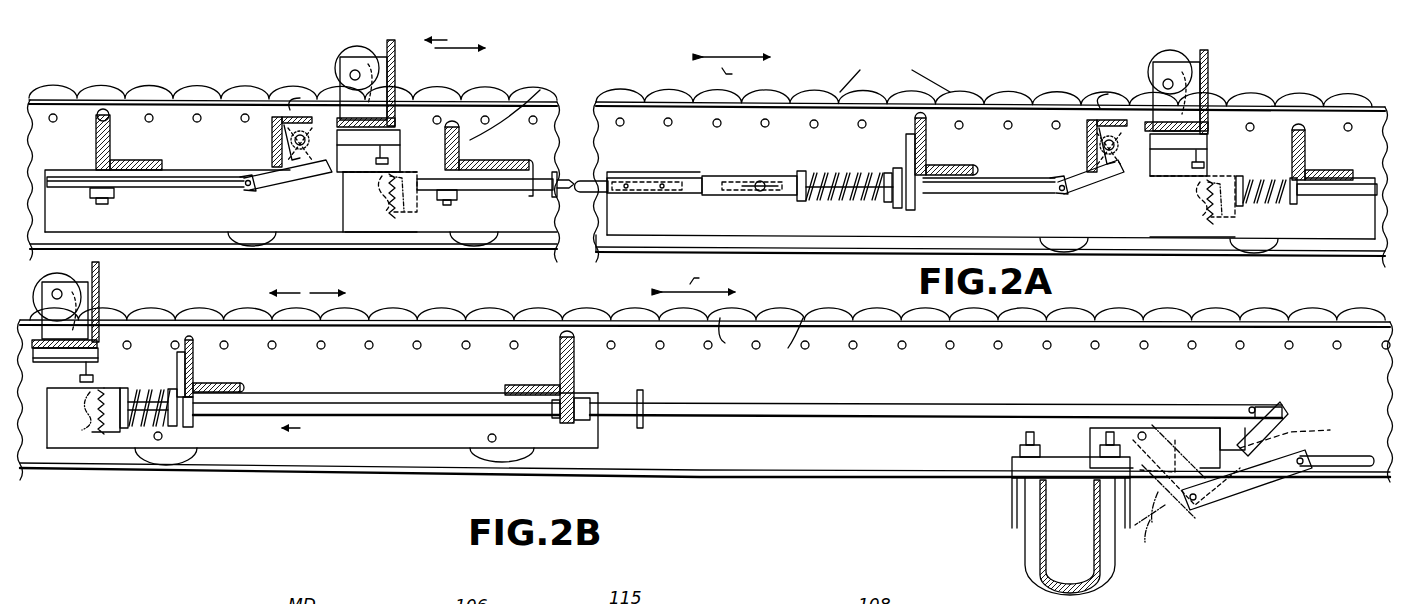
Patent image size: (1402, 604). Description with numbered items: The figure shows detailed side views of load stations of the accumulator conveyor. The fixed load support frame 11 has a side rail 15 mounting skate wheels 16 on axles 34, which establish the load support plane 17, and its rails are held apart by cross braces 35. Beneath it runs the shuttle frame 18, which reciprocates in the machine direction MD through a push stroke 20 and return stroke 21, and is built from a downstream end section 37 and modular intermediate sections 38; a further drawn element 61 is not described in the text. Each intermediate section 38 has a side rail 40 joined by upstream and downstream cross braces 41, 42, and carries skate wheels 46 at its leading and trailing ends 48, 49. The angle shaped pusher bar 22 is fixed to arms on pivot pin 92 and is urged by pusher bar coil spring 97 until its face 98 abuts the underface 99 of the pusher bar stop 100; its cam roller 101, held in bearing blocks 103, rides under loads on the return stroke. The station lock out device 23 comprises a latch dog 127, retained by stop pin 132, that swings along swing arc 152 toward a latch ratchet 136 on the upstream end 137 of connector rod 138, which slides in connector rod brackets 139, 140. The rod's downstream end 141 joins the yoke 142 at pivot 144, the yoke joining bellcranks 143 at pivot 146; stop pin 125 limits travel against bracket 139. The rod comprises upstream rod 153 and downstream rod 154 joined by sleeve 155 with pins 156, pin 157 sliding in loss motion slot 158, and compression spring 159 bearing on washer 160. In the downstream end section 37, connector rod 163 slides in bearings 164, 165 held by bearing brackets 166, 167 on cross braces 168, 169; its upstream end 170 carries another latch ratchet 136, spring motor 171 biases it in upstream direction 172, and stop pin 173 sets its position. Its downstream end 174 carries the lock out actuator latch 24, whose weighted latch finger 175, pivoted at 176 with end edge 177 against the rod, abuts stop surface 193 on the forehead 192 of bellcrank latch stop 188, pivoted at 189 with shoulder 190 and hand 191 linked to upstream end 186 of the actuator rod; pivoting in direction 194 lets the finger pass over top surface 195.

In FIG. 2A, the load support frame 11 is at (218, 128).
In FIG. 2B, the load support frame 11 is at (820, 452).
In FIG. 2A, the side rail 15 is at (178, 118).
In FIG. 2B, the side rail 15 is at (837, 344).
In FIG. 2A, the skate wheels 16 is at (895, 68).
In FIG. 2B, the skate wheels 16 is at (788, 348).
In FIG. 2A, the load support plane 17 is at (826, 90).
In FIG. 2B, the load support plane 17 is at (545, 314).
In FIG. 2A, the shuttle frame 18 is at (622, 238).
In FIG. 2B, the shuttle frame 18 is at (300, 470).
In FIG. 2A, the push stroke 20 is at (458, 50).
In FIG. 2B, the push stroke 20 is at (330, 292).
In FIG. 2A, the return stroke 21 is at (435, 42).
In FIG. 2B, the return stroke 21 is at (288, 288).
In FIG. 2A, the pusher bar 22 is at (395, 62).
In FIG. 2B, the pusher bar 22 is at (100, 274).
In FIG. 2A, the station lock out device 23 is at (408, 224).
In FIG. 2B, the station lock out device 23 is at (86, 478).
In FIG. 2B, the lock out actuator latch 24 is at (1350, 368).
In FIG. 2A, the axle 34 is at (962, 127).
In FIG. 2B, the axle 34 is at (806, 348).
In FIG. 2B, the cross braces 35 is at (1040, 550).
In FIG. 2A, the downstream end section 37 is at (1346, 238).
In FIG. 2B, the downstream end section 37 is at (384, 436).
In FIG. 2A, the modular intermediate section 38 is at (193, 236).
In FIG. 2A, the side rail 40 is at (157, 231).
In FIG. 2A, the upstream transverse cross brace 41 is at (540, 90).
In FIG. 2A, the downstream transverse cross brace 42 is at (108, 114).
In FIG. 2A, the skate wheels 46 is at (262, 245).
In FIG. 2A, the leading end 48 is at (327, 236).
In FIG. 2A, the trailing end 49 is at (358, 236).
In FIG. 2A, the end plate 61 is at (1365, 238).
In FIG. 2B, the end plate 61 is at (558, 448).
In FIG. 2A, the pivot pin 92 is at (275, 142).
In FIG. 2A, the pusher bar coil spring 97 is at (297, 182).
In FIG. 2A, the pusher bar face 98 is at (340, 84).
In FIG. 2B, the pusher bar face 98 is at (65, 310).
In FIG. 2A, the underface of pusher bar stop 99 is at (292, 128).
In FIG. 2A, the pusher bar stop 100 is at (270, 113).
In FIG. 2A, the cam roller 101 is at (341, 54).
In FIG. 2B, the cam roller 101 is at (25, 296).
In FIG. 2A, the bearing blocks 103 is at (383, 124).
In FIG. 2B, the bearing blocks 103 is at (82, 322).
In FIG. 2A, the stop pin 125 is at (576, 102).
In FIG. 2A, the latch dog 127 is at (396, 140).
In FIG. 2B, the latch dog 127 is at (104, 354).
In FIG. 2A, the stop pin 132 is at (378, 156).
In FIG. 2B, the stop pin 132 is at (82, 373).
In FIG. 2A, the latch ratchet 136 is at (388, 200).
In FIG. 2B, the latch ratchet 136 is at (95, 440).
In FIG. 2A, the upstream end of connector rod 137 is at (472, 192).
In FIG. 2A, the connector rod 138 is at (600, 184).
In FIG. 2A, the connector rod bracket 139 is at (530, 160).
In FIG. 2A, the connector rod bracket 140 is at (908, 143).
In FIG. 2A, the downstream end of connector rod 141 is at (160, 188).
In FIG. 2A, the yoke 142 is at (305, 192).
In FIG. 2A, the bellcrank 143 is at (278, 162).
In FIG. 2A, the pivot connection 144 is at (242, 186).
In FIG. 2A, the pivot connection 146 is at (322, 192).
In FIG. 2A, the swing arc 152 is at (447, 202).
In FIG. 2B, the swing arc 152 is at (104, 388).
In FIG. 2A, the upstream rod 153 is at (600, 196).
In FIG. 2A, the downstream rod 154 is at (928, 198).
In FIG. 2A, the sleeve 155 is at (693, 180).
In FIG. 2A, the pins 156 is at (668, 190).
In FIG. 2A, the pin 157 is at (762, 182).
In FIG. 2A, the loss motion slot 158 is at (738, 192).
In FIG. 2A, the compression spring 159 is at (822, 202).
In FIG. 2A, the washer 160 is at (904, 170).
In FIG. 2B, the connector rod 163 is at (815, 406).
In FIG. 2B, the bearing 164 is at (204, 412).
In FIG. 2B, the bearing 165 is at (564, 416).
In FIG. 2B, the bearing bracket 166 is at (181, 428).
In FIG. 2B, the bearing bracket 167 is at (576, 371).
In FIG. 2A, the cross brace 168 is at (1310, 156).
In FIG. 2B, the cross brace 168 is at (196, 372).
In FIG. 2B, the cross brace 169 is at (556, 370).
In FIG. 2B, the upstream end of connector rod 170 is at (158, 440).
In FIG. 2B, the spring motor 171 is at (140, 445).
In FIG. 2B, the upstream direction 172 is at (317, 430).
In FIG. 2B, the stop pin 173 is at (646, 412).
In FIG. 2B, the downstream end of connector rod 174 is at (1288, 411).
In FIG. 2B, the weighted latch finger 175 is at (1258, 462).
In FIG. 2B, the pivot connection 176 is at (1252, 404).
In FIG. 2B, the end edge 177 is at (1298, 434).
In FIG. 2B, the upstream end of lock out actuator rod 186 is at (1362, 470).
In FIG. 2B, the bellcrank latch stop 188 is at (1180, 438).
In FIG. 2B, the pivot 189 is at (1146, 428).
In FIG. 2B, the shoulder 190 is at (1138, 433).
In FIG. 2B, the hand 191 is at (1166, 484).
In FIG. 2B, the forehead 192 is at (1190, 482).
In FIG. 2B, the stop surface 193 is at (1228, 428).
In FIG. 2B, the pivot direction 194 is at (1142, 506).
In FIG. 2B, the top surface 195 is at (1152, 425).
In FIG. 2A, the machine direction MD is at (731, 69).
In FIG. 2B, the machine direction MD is at (693, 281).